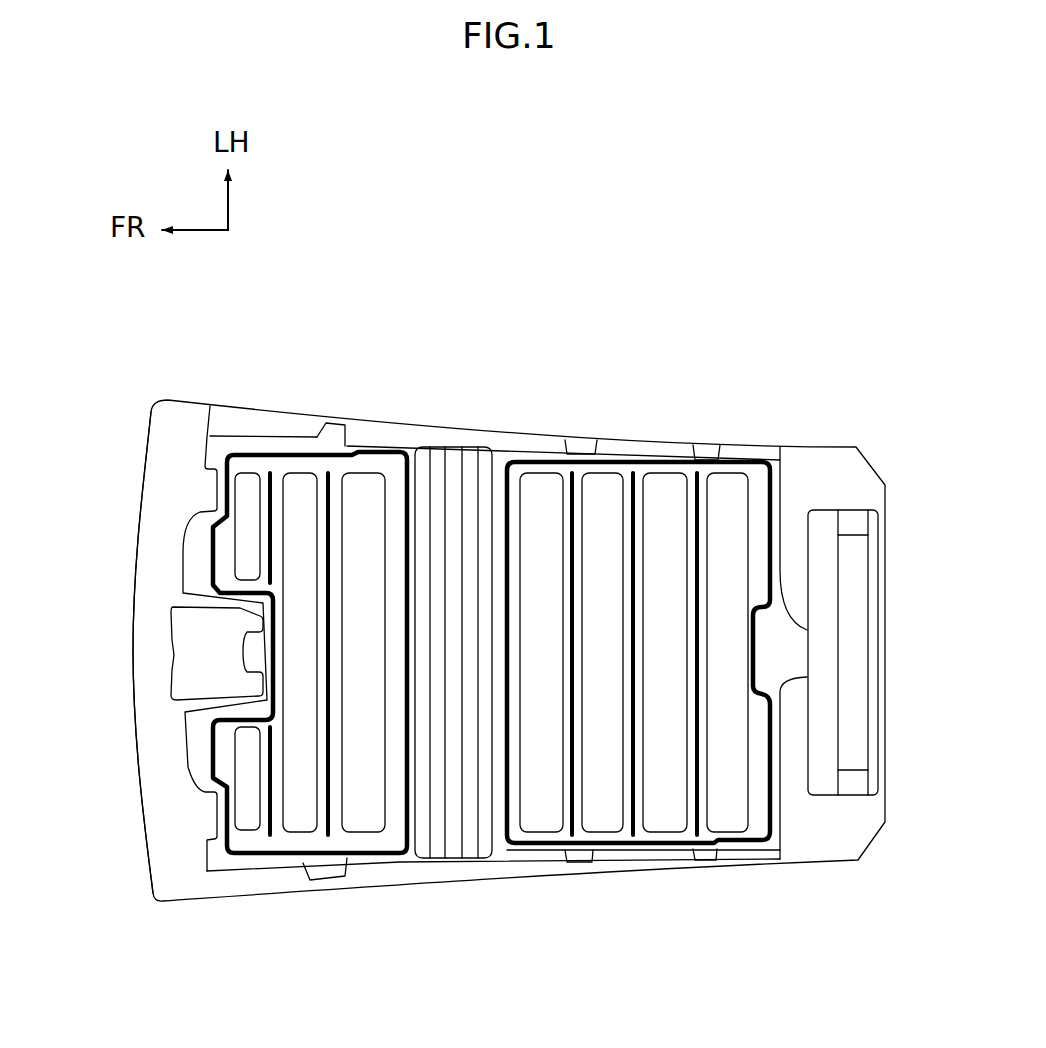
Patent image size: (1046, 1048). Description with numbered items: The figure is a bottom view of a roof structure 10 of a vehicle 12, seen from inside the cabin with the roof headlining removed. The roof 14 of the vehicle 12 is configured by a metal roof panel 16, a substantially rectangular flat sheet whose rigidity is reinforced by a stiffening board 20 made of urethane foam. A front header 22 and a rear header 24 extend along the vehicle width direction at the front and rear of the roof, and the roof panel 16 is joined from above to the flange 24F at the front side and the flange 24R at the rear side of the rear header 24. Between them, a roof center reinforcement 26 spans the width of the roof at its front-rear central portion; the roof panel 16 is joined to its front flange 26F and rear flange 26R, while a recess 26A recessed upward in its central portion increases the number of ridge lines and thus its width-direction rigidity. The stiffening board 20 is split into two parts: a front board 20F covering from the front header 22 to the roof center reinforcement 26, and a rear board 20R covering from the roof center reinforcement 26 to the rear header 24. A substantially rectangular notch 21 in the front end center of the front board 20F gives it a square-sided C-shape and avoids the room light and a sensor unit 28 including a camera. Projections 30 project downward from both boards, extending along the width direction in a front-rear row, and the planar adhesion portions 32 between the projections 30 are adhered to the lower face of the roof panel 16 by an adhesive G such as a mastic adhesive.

The roof structure 10 is at (296, 838).
The vehicle 12 is at (601, 391).
The roof 14 is at (372, 426).
The roof panel 16 is at (815, 457).
The stiffening board 20 is at (491, 730).
The front board 20F is at (407, 854).
The rear board 20R is at (497, 845).
The notch 21 is at (194, 590).
The front header 22 is at (153, 705).
The rear header 24 is at (853, 727).
The flange 24F is at (823, 790).
The flange 24R is at (873, 798).
The roof center reinforcement 26 is at (511, 562).
The recess 26A is at (460, 460).
The flange 26F is at (427, 460).
The flange 26R is at (487, 460).
The sensor unit 28 is at (195, 642).
The projections 30 is at (724, 490).
The adhesion portions 32 is at (321, 538).
The adhesive G is at (640, 748).